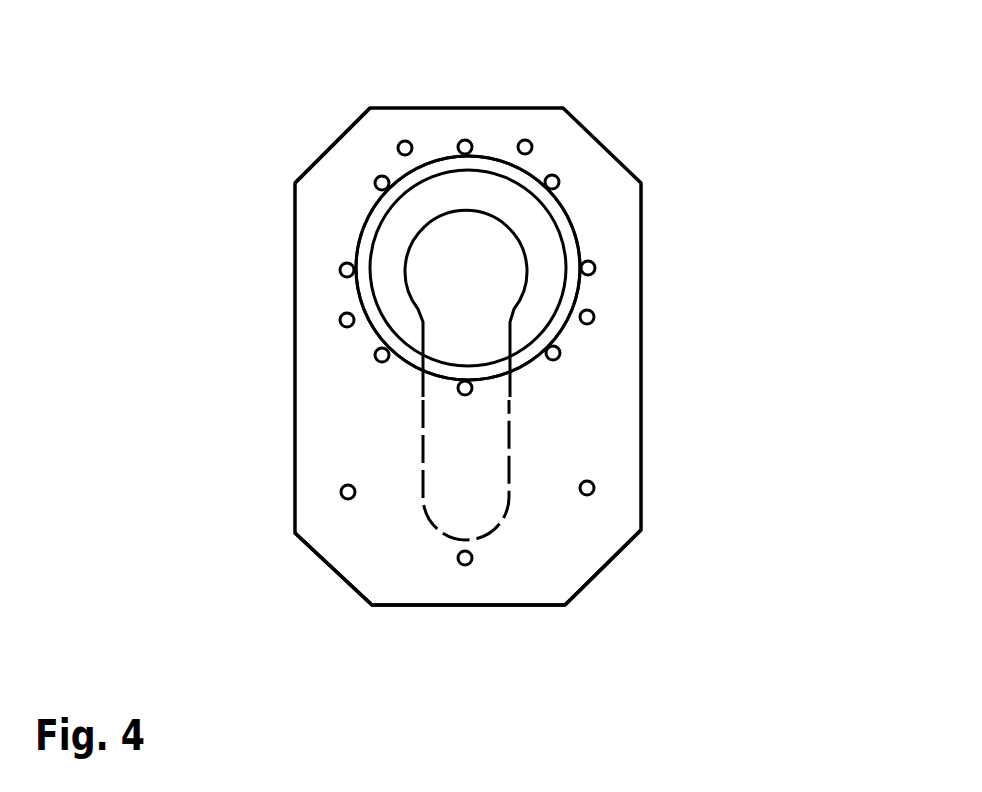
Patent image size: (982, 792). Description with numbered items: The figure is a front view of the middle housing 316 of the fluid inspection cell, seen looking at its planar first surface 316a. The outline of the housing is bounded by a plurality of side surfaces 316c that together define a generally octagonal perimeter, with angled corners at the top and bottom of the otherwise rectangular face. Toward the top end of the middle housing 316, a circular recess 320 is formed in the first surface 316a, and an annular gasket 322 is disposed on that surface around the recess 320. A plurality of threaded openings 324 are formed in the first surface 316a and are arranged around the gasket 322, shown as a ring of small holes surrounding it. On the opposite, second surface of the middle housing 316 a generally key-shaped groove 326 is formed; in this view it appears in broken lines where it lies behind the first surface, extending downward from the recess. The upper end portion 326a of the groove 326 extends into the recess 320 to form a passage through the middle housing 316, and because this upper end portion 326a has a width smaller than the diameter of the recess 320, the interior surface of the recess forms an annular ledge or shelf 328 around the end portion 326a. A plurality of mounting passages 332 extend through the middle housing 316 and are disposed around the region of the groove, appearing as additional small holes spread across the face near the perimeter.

The middle housing 316 is at (242, 490).
The first surface 316a is at (570, 423).
The side surfaces 316c is at (340, 137).
The circular recess 320 is at (540, 235).
The annular gasket 322 is at (478, 163).
The threaded openings 324 is at (465, 139).
The key-shaped groove 326 is at (463, 443).
The upper end portion of the groove 326a is at (480, 240).
The annular ledge or shelf 328 is at (537, 297).
The mounting passages 332 is at (404, 140).